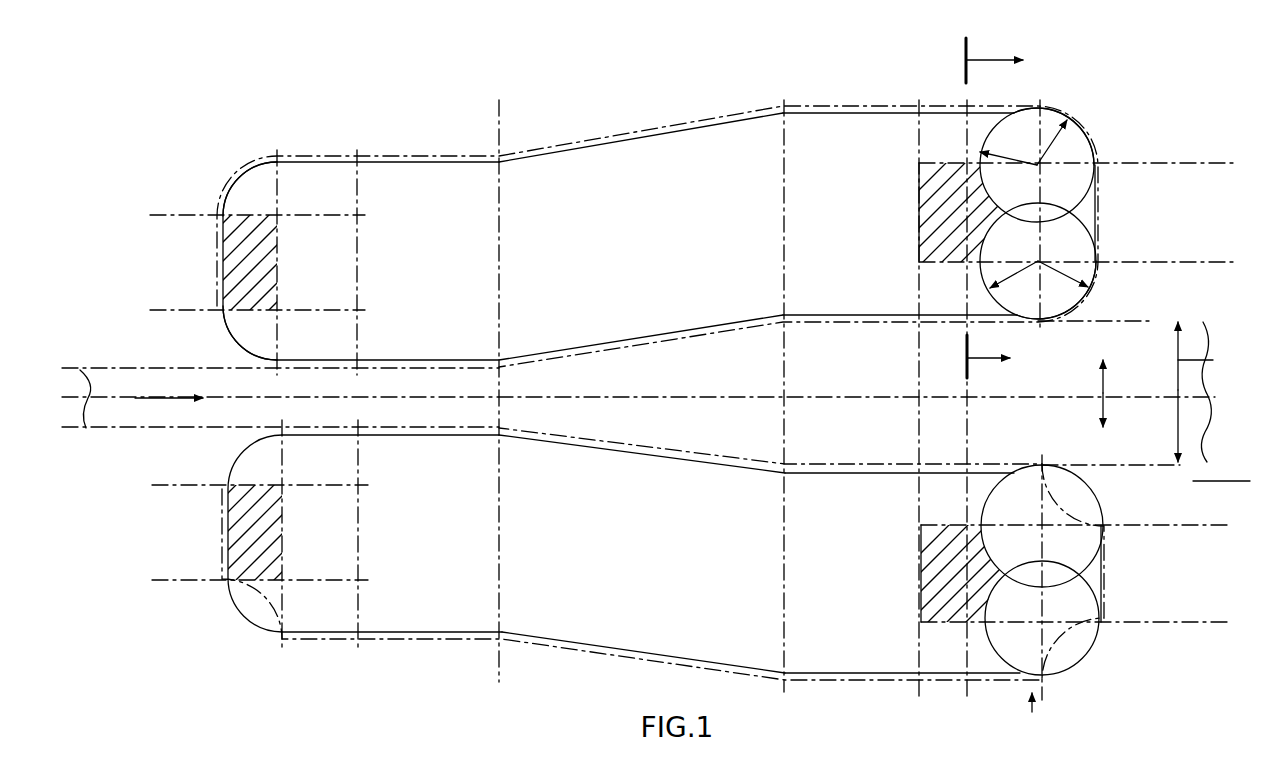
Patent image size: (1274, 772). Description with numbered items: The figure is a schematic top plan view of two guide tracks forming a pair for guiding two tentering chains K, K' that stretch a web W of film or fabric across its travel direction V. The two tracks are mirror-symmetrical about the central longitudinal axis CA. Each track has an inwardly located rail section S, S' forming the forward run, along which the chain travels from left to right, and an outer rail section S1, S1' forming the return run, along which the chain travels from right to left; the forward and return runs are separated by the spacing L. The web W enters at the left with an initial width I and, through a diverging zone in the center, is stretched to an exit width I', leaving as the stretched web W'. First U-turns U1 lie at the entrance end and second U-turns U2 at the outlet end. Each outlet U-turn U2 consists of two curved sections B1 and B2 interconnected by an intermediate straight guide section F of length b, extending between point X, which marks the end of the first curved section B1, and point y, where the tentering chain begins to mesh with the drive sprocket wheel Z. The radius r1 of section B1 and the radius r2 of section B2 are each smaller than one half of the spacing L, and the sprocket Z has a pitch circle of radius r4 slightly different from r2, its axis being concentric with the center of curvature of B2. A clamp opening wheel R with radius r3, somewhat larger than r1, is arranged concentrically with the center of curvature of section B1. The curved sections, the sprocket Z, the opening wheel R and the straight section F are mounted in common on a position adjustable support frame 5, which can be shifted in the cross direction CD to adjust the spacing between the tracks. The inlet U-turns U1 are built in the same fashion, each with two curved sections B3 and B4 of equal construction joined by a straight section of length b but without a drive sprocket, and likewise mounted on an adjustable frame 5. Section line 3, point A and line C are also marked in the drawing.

The position adjustable support frame 5 is at (343, 240).
The outer rail section S1 is at (388, 129).
The tentering chain K is at (641, 243).
The inner rail section S is at (428, 336).
The curved guide rail section B3 is at (258, 165).
The curved guide rail section B4 is at (227, 327).
The drive sprocket wheel Z is at (993, 120).
The curved guide section B2 is at (1078, 122).
The curved guide section B1 is at (1087, 287).
The intermediate straight guide section F is at (1100, 195).
The point y is at (1093, 167).
The point x X is at (1095, 250).
The pitch circle radius r4 is at (1008, 148).
The radius of guide section B2 r2 is at (1056, 143).
The radius of clamp opening wheel r3 is at (1014, 281).
The radius of guide section B1 r1 is at (1063, 281).
The clamp opening wheel R is at (988, 290).
The length of intermediate straight guide section b is at (157, 215).
The spacing L is at (805, 113).
The initial width I is at (402, 397).
The travel direction V is at (141, 396).
The web W is at (280, 421).
The stretched web W' is at (1117, 377).
The section line 3- 3 is at (1005, 208).
The cross direction CD is at (1122, 389).
The exit width I' is at (1203, 392).
The central longitudinal axis CA is at (1213, 395).
The line C is at (1221, 497).
The first U-turn U1 is at (212, 130).
The second U-turn U2 is at (1142, 108).
The inner rail section S' is at (533, 475).
The outer rail section S1' is at (392, 661).
The tentering chain K' is at (643, 661).
The axis A is at (1042, 709).